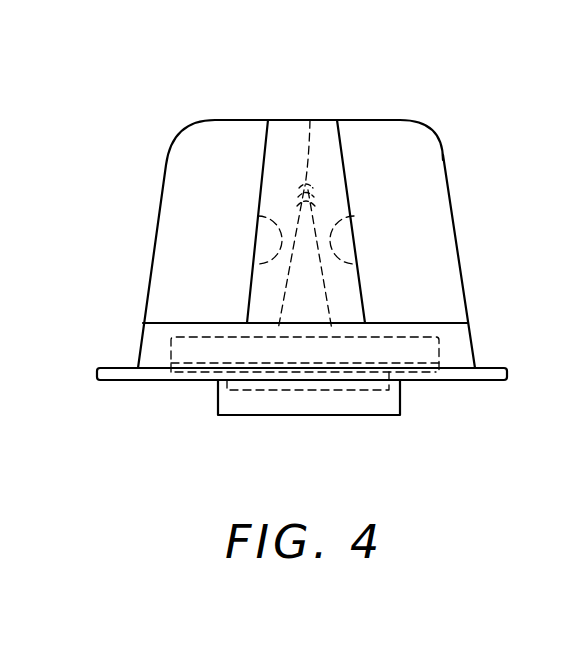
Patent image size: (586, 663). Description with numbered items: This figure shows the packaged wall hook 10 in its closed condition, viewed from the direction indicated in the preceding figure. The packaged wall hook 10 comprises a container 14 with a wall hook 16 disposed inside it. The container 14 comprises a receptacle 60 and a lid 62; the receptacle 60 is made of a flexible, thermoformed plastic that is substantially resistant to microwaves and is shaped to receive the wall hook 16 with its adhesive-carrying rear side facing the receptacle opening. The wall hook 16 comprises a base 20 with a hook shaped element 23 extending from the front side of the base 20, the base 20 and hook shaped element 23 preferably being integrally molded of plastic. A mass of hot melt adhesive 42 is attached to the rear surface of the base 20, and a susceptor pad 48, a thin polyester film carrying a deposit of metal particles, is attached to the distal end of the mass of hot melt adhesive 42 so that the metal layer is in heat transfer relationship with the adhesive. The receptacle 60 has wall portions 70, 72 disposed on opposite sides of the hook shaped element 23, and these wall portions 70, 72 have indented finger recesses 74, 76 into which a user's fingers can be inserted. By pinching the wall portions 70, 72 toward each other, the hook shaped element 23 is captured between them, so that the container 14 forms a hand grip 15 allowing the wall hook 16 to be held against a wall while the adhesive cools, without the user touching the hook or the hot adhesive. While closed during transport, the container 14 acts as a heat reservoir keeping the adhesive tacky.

The packaged wall hook 10 is at (445, 78).
The container 14 is at (443, 146).
The hand grip 15 is at (358, 220).
The wall hook 16 is at (442, 350).
The base 20 is at (195, 345).
The hook shaped element 23 is at (310, 120).
The mass of hot melt adhesive 42 is at (338, 382).
The susceptor pad 48 is at (297, 392).
The receptacle 60 is at (445, 170).
The lid 62 is at (137, 379).
The wall portion 70 is at (264, 157).
The wall portion 72 is at (344, 157).
The finger recess 74 is at (258, 233).
The finger recess 76 is at (342, 244).